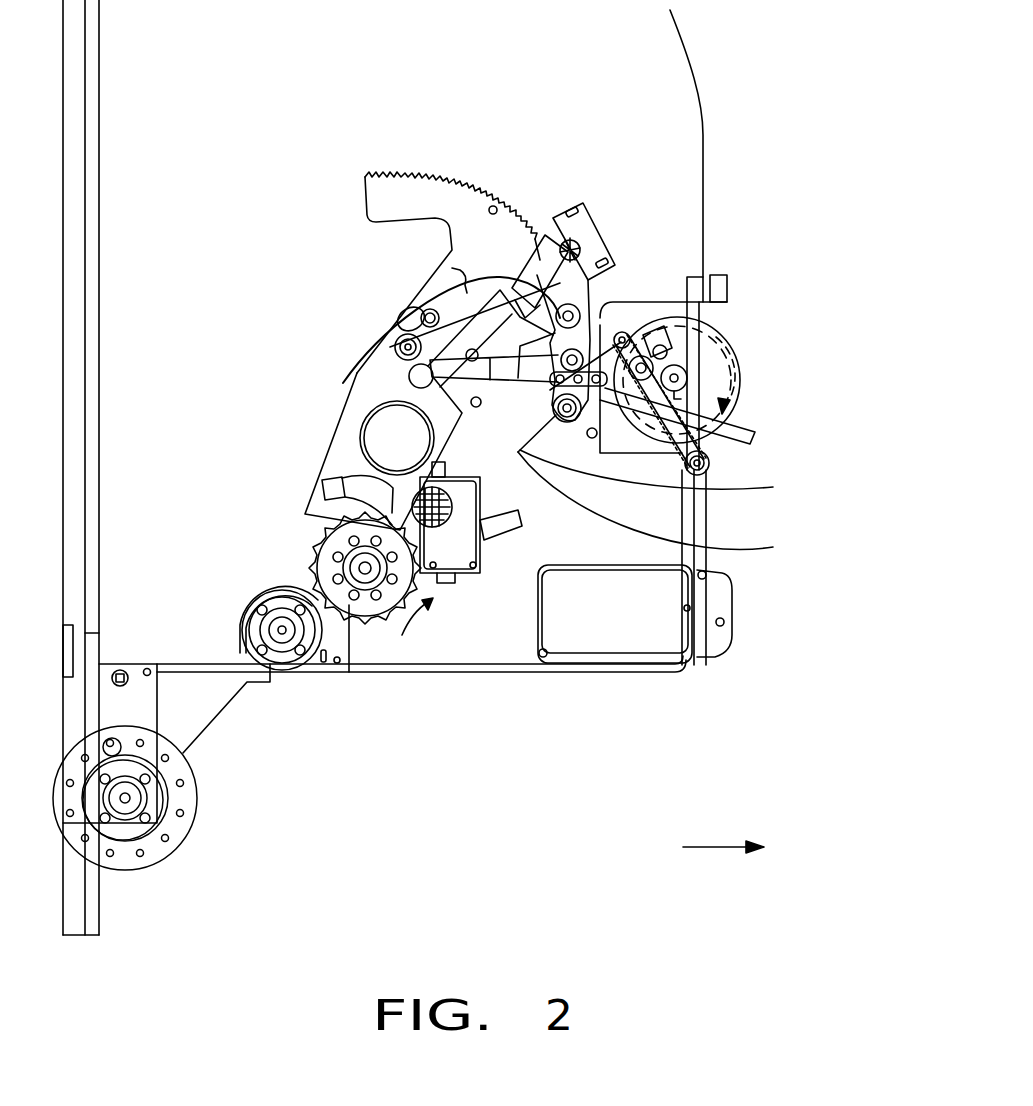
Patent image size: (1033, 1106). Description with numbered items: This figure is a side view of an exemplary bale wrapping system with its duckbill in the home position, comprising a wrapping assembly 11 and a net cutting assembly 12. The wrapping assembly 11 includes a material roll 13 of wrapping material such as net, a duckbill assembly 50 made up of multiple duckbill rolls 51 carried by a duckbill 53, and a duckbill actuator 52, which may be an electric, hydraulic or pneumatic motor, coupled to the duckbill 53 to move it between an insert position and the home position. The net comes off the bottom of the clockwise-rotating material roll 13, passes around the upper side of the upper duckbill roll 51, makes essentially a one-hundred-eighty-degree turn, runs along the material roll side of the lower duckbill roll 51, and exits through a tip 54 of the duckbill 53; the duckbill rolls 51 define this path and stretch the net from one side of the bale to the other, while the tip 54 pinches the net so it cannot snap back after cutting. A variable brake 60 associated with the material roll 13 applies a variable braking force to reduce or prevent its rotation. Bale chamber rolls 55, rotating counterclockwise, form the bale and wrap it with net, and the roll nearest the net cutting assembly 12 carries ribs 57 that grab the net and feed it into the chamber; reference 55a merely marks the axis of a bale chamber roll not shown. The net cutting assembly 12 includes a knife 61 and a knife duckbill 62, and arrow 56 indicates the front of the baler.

The wrapping assembly 11 is at (568, 178).
The net cutting assembly 12 is at (463, 590).
The material roll 13 is at (742, 368).
The duckbill assembly 50 is at (552, 353).
The duckbill rolls 51 is at (572, 310).
The duckbill actuator 52 is at (536, 255).
The duckbill 53 is at (667, 474).
The tip 54 is at (666, 490).
The bale chamber rolls 55 is at (368, 607).
The axis of a bale chamber roll 55a is at (390, 440).
The arrow 56 is at (718, 850).
The ribs 57 is at (347, 622).
The variable brake 60 is at (736, 388).
The knife 61 is at (545, 575).
The knife duckbill 62 is at (521, 527).